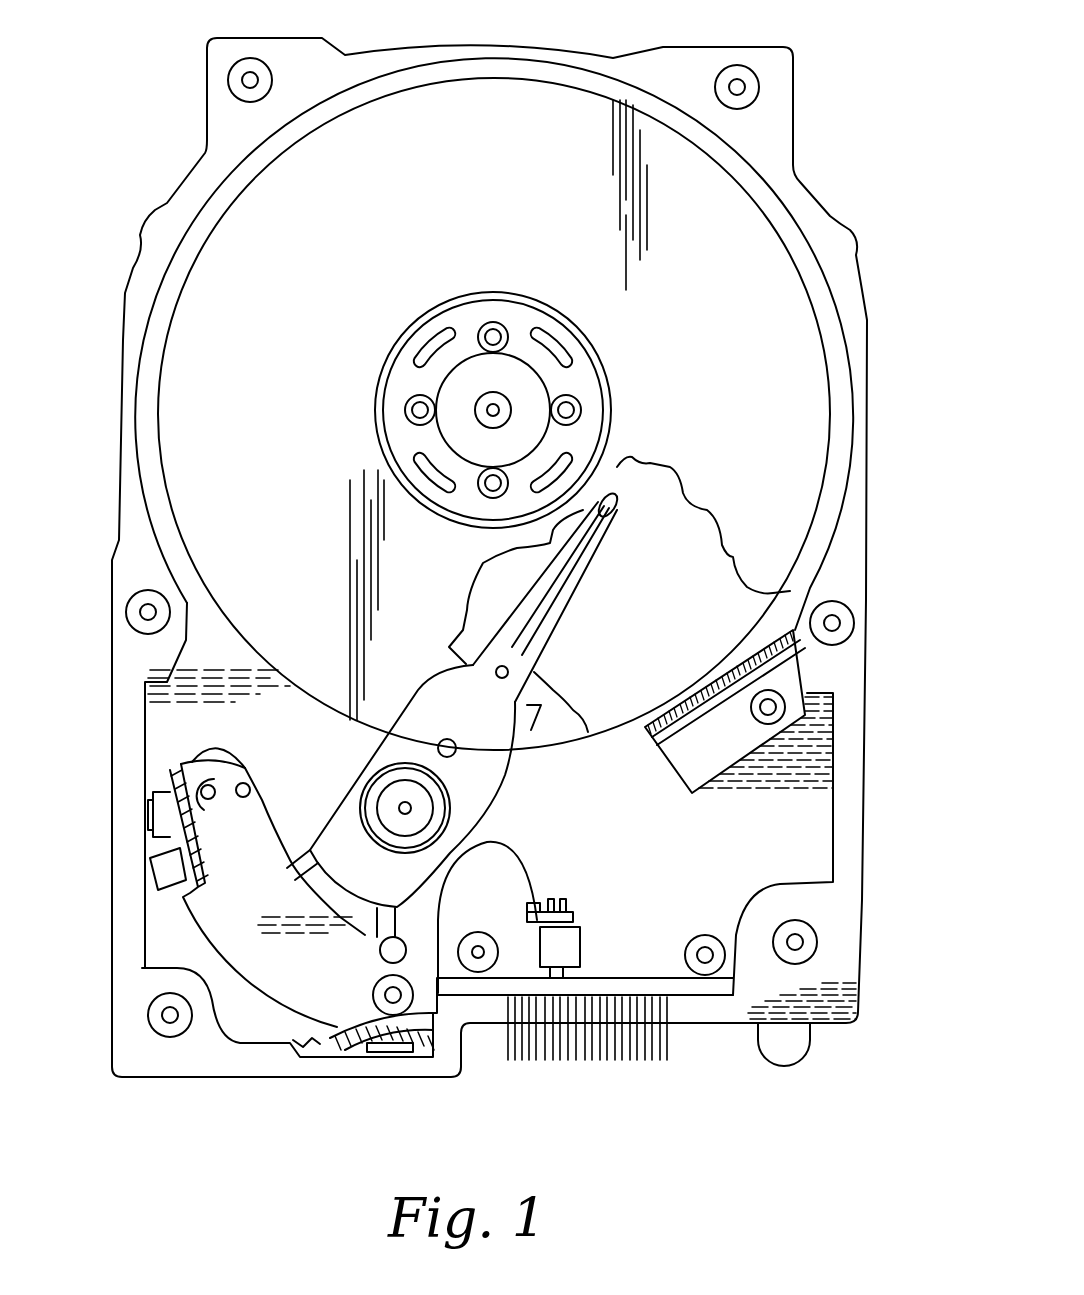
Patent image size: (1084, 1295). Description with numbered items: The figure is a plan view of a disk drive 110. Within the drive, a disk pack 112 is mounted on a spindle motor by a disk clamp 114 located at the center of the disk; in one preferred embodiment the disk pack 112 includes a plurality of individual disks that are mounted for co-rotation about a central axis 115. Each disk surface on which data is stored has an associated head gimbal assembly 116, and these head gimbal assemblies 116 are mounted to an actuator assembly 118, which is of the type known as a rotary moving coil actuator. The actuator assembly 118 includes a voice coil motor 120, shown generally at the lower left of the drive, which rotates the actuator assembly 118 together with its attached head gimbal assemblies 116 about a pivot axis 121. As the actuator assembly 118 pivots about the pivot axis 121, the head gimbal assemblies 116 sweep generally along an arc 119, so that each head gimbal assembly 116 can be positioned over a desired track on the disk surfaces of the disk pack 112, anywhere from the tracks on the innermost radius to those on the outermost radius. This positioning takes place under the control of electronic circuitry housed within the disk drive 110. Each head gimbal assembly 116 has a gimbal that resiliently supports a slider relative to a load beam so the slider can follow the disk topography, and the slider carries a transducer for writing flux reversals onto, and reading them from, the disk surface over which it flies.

The disk drive 110 is at (851, 90).
The disk pack 112 is at (540, 189).
The disk clamp 114 is at (416, 311).
The central axis 115 is at (495, 408).
The head gimbal assembly 116 is at (616, 496).
The actuator assembly 118 is at (540, 700).
The arc 119 is at (557, 542).
The voice coil motor 120 is at (242, 911).
The pivot axis 121 is at (403, 806).